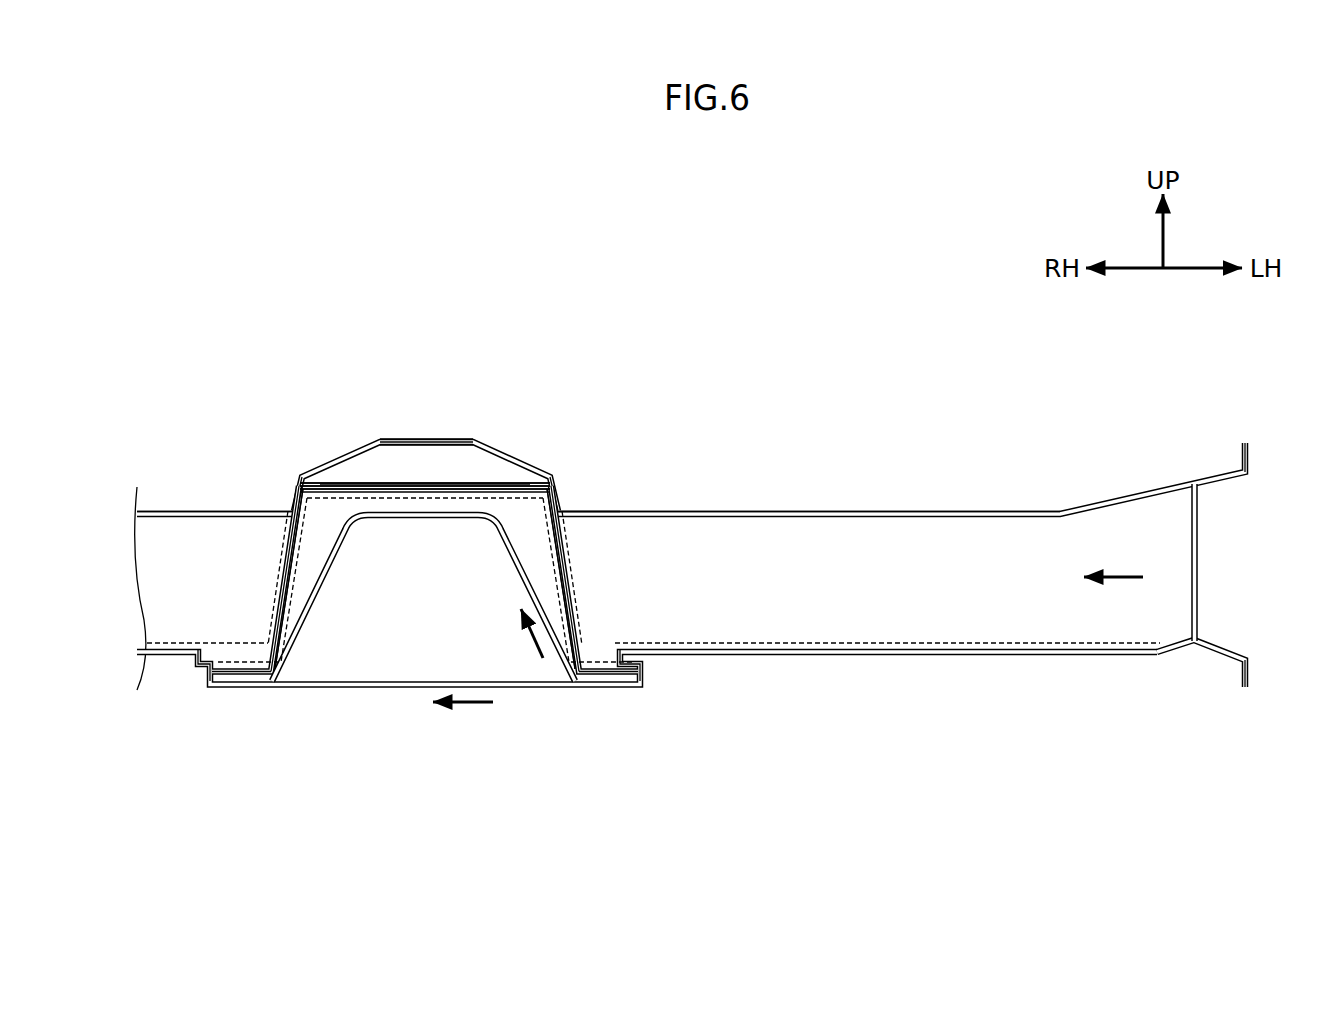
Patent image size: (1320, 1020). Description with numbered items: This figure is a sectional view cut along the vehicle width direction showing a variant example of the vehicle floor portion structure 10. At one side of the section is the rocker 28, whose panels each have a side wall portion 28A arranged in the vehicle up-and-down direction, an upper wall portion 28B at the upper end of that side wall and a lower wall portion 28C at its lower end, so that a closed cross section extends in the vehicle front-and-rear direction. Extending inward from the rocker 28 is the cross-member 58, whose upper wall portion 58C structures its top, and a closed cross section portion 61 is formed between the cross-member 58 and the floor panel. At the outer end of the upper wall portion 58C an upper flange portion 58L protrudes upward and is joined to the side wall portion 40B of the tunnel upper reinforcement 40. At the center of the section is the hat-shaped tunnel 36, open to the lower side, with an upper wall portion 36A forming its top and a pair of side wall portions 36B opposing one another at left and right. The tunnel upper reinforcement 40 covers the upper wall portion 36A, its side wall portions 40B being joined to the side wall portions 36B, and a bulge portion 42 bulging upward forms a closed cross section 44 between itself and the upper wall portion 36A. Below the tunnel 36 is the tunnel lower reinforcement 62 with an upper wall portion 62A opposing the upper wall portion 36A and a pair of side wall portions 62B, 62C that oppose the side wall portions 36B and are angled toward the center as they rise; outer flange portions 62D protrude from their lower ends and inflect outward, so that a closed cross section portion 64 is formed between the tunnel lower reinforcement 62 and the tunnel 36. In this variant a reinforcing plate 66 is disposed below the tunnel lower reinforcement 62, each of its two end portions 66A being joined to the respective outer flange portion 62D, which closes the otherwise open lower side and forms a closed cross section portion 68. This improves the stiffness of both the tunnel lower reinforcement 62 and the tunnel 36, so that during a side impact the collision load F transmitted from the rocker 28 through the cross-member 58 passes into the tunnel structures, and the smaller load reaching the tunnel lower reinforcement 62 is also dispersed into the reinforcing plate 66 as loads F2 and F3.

The vehicle lower structure 10 is at (569, 361).
The rocker 28 is at (1221, 676).
The side wall portion 28A is at (1190, 541).
The upper wall portion 28B is at (1234, 465).
The lower wall portion 28C is at (1233, 662).
The tunnel 36 is at (360, 484).
The upper wall portion 36A is at (390, 485).
The side wall portions 36B is at (268, 620).
The tunnel upper reinforcement 40 is at (499, 437).
The side wall portions 40B is at (295, 490).
The bulge portion 42 is at (477, 437).
The closed cross section 44 is at (438, 467).
The cross-member 58 is at (967, 507).
The upper wall portion 58C is at (817, 510).
The upper flange portion 58L is at (285, 507).
The closed cross section portion 61 is at (825, 605).
The tunnel lower reinforcement 62 is at (533, 570).
The upper wall portion 62A is at (458, 508).
The side wall portion 62B is at (557, 580).
The side wall portion 62C is at (305, 580).
The outer flange portions 62D is at (237, 690).
The closed cross section portion 64 is at (527, 525).
The reinforcing plate 66 is at (513, 694).
The end portions 66A is at (250, 690).
The closed cross section portion 68 is at (398, 627).
The collision load F is at (1118, 580).
The load F2 is at (535, 640).
The load F3 is at (467, 702).